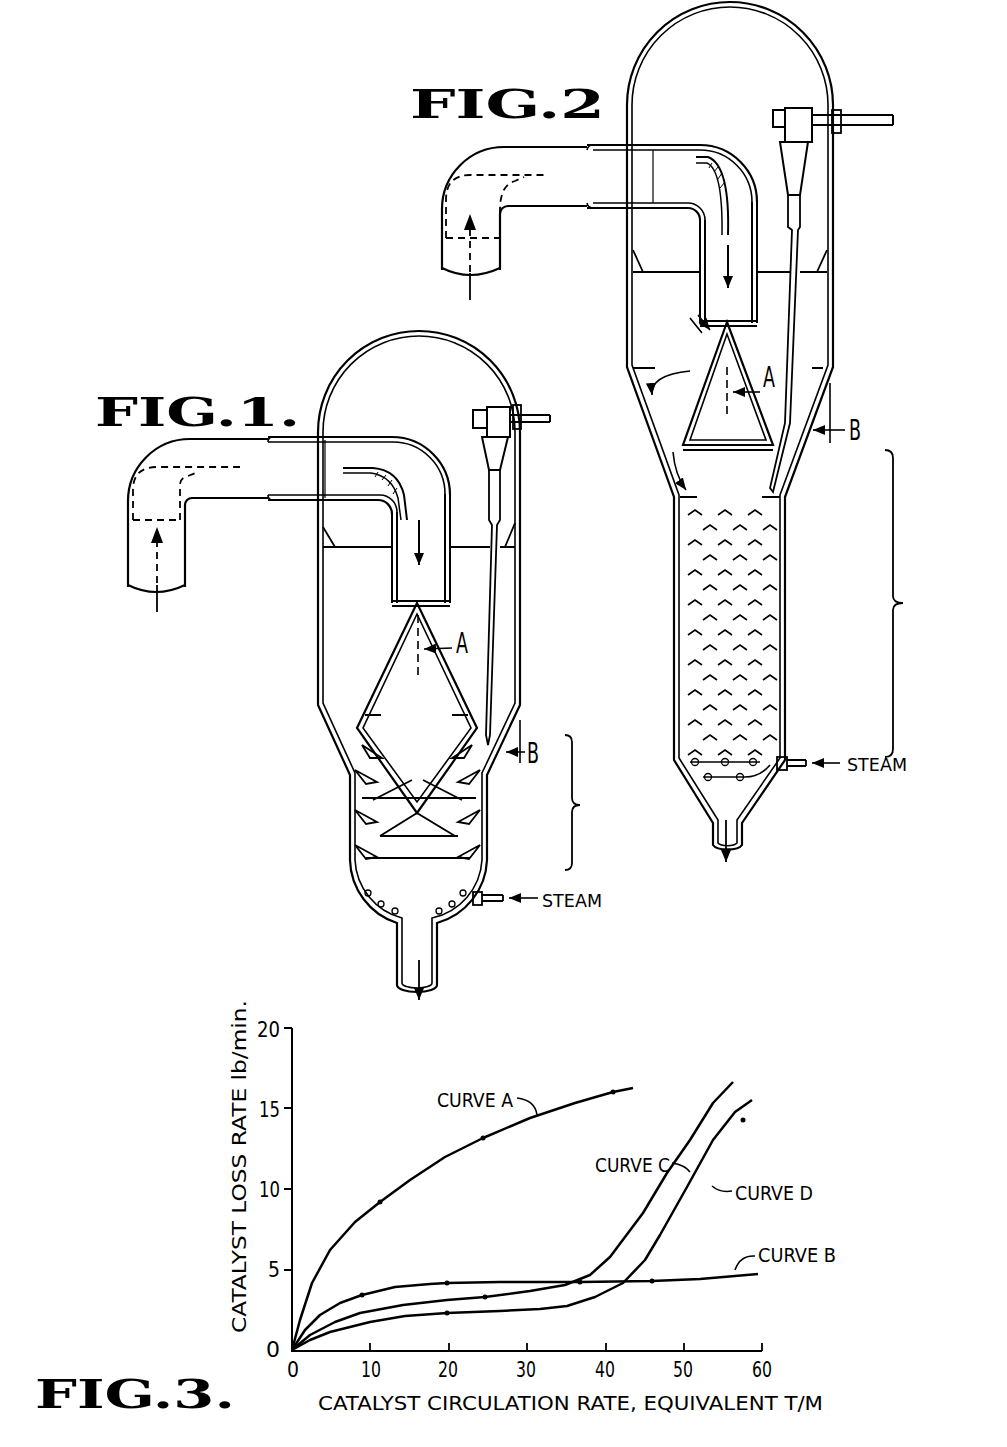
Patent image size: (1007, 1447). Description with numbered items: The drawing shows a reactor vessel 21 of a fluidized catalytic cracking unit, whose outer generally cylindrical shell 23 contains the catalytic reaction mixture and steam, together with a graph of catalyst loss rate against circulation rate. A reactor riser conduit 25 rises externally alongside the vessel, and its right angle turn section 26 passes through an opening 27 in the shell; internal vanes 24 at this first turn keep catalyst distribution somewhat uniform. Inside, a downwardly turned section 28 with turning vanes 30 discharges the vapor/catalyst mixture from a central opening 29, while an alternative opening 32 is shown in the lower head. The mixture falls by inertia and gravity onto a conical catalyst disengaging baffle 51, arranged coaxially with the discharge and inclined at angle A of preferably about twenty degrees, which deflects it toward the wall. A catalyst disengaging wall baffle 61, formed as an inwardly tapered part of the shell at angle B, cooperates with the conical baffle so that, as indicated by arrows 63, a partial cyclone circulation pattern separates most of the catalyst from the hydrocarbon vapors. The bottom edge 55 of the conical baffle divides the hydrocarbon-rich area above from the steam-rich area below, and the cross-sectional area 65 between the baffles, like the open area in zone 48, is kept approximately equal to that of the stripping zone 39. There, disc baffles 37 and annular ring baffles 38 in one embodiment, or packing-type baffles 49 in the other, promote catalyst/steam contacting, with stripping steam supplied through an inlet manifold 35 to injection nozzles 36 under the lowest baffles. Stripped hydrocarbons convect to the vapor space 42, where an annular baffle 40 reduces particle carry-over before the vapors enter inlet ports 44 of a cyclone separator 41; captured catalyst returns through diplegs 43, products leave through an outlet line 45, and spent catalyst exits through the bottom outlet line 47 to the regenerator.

In FIG. 1, the reactor vessel 21 is at (362, 348).
In FIG. 2, the reactor vessel 21 is at (833, 46).
In FIG. 1, the outer generally cylindrical shell 23 is at (522, 672).
In FIG. 2, the outer generally cylindrical shell 23 is at (836, 318).
In FIG. 1, the internal vanes 24 is at (135, 492).
In FIG. 2, the internal vanes 24 is at (446, 185).
In FIG. 1, the reactor riser conduit 25 is at (188, 575).
In FIG. 2, the reactor riser conduit 25 is at (500, 253).
In FIG. 1, the right angle turn section 26 is at (246, 493).
In FIG. 2, the right angle turn section 26 is at (543, 207).
In FIG. 1, the opening in sidewall 27 is at (328, 446).
In FIG. 2, the opening in sidewall 27 is at (650, 152).
In FIG. 1, the downwardly turned section 28 is at (449, 527).
In FIG. 2, the downwardly turned section 28 is at (700, 250).
In FIG. 1, the opening 29 is at (443, 613).
In FIG. 2, the opening 29 is at (752, 324).
In FIG. 1, the vanes 30 is at (402, 493).
In FIG. 2, the vanes 30 is at (697, 190).
In FIG. 1, the opening 32 is at (380, 927).
In FIG. 1, the inlet manifold 35 is at (460, 917).
In FIG. 2, the inlet manifold 35 is at (793, 771).
In FIG. 1, the injection nozzles 36 is at (380, 903).
In FIG. 2, the injection nozzles 36 is at (720, 780).
In FIG. 1, the discs 37 is at (378, 832).
In FIG. 1, the annular rings 38 is at (470, 782).
In FIG. 1, the stripping zone 39 is at (588, 802).
In FIG. 2, the stripping zone 39 is at (906, 603).
In FIG. 1, the annular baffle 40 is at (507, 546).
In FIG. 2, the annular baffle 40 is at (815, 272).
In FIG. 1, the cyclone separator 41 is at (503, 410).
In FIG. 2, the cyclone separator 41 is at (808, 112).
In FIG. 1, the space 42 is at (428, 392).
In FIG. 2, the space 42 is at (740, 84).
In FIG. 1, the diplegs 43 is at (499, 572).
In FIG. 2, the diplegs 43 is at (797, 233).
In FIG. 1, the inlet ports 44 is at (475, 412).
In FIG. 2, the inlet ports 44 is at (778, 110).
In FIG. 1, the outlet line 45 is at (544, 413).
In FIG. 2, the outlet line 45 is at (873, 118).
In FIG. 1, the outlet line 47 is at (438, 978).
In FIG. 2, the outlet line 47 is at (740, 837).
In FIG. 1, the zone 48 is at (360, 752).
In FIG. 2, the baffles 49 is at (762, 612).
In FIG. 1, the conical catalyst disengaging baffle 51 is at (392, 644).
In FIG. 2, the conical catalyst disengaging baffle 51 is at (742, 360).
In FIG. 1, the bottom edge 55 is at (358, 745).
In FIG. 2, the bottom edge 55 is at (773, 447).
In FIG. 1, the catalyst disengaging wall baffle 61 is at (330, 722).
In FIG. 2, the catalyst disengaging wall baffle 61 is at (800, 460).
In FIG. 2, the arrows 63 is at (686, 314).
In FIG. 1, the cross-sectional area 65 is at (358, 722).
In FIG. 2, the cross-sectional area 65 is at (672, 430).